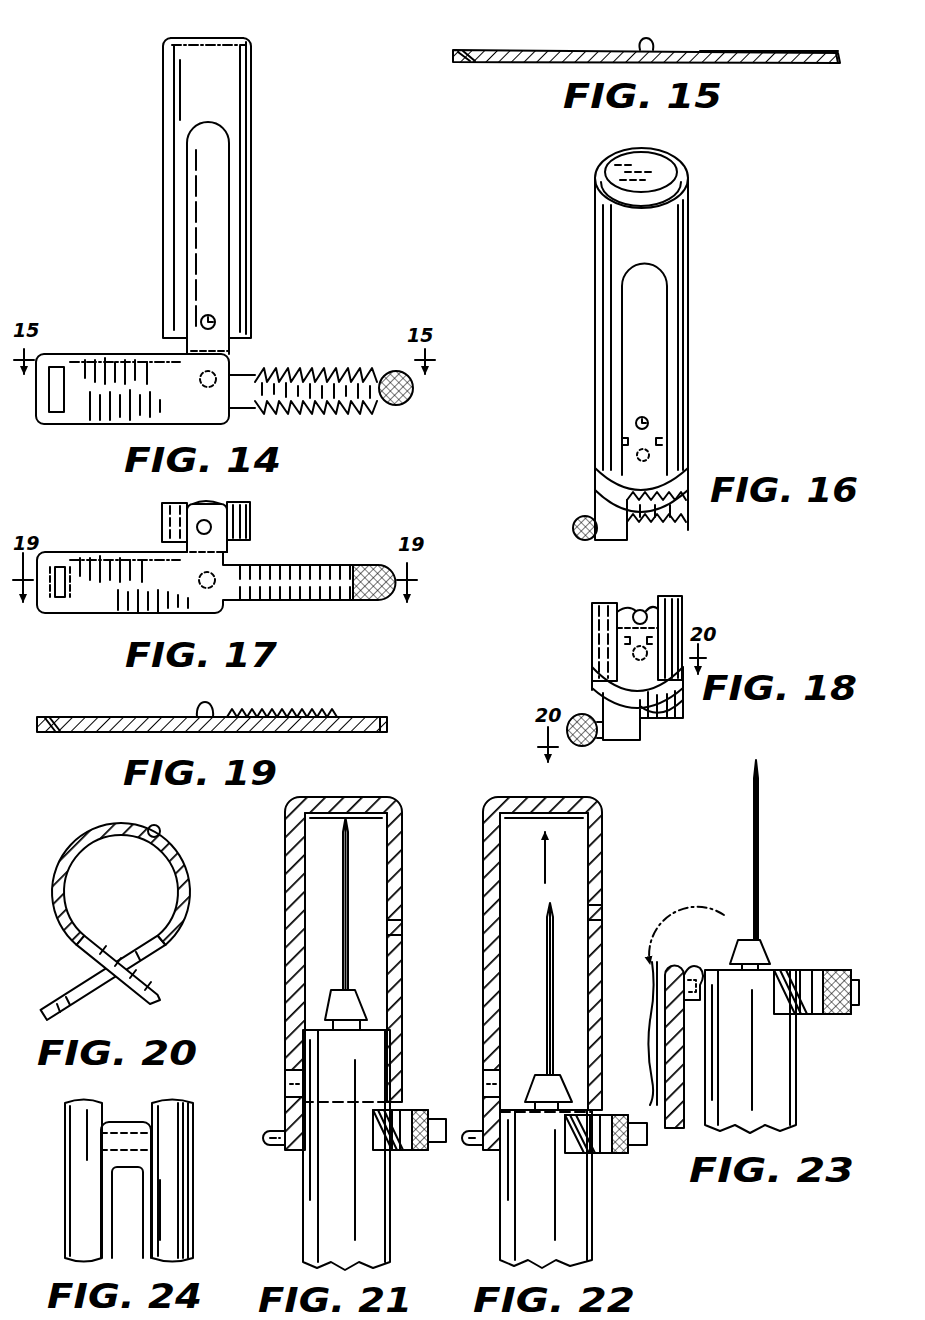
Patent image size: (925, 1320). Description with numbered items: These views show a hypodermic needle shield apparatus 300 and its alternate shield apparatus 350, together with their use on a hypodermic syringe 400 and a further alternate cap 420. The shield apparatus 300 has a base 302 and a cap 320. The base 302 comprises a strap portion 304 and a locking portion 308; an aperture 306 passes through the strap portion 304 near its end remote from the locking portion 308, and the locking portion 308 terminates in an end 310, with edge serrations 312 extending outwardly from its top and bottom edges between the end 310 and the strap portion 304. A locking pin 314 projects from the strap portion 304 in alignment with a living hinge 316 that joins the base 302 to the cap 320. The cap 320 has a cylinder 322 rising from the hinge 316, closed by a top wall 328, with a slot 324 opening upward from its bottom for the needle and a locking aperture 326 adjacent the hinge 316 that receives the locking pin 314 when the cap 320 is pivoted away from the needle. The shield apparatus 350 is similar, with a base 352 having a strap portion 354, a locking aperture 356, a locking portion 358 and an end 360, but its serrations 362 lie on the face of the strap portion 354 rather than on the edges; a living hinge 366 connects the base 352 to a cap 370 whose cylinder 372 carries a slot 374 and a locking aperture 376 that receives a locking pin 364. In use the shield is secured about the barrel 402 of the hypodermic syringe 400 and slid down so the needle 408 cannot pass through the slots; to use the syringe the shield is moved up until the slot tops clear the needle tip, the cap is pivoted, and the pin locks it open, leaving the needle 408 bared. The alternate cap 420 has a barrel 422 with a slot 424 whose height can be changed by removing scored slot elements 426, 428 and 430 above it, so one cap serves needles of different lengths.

In FIG. 14, the hypodermic needle shield apparatus 300 is at (255, 243).
In FIG. 21, the hypodermic needle shield apparatus 300 is at (366, 996).
In FIG. 22, the hypodermic needle shield apparatus 300 is at (580, 999).
In FIG. 14, the base 302 is at (170, 381).
In FIG. 15, the base 302 is at (650, 60).
In FIG. 21, the base 302 is at (411, 1172).
In FIG. 22, the base 302 is at (606, 1134).
In FIG. 23, the base 302 is at (816, 960).
In FIG. 14, the strap portion 304 is at (96, 410).
In FIG. 15, the strap portion 304 is at (512, 63).
In FIG. 16, the strap portion 304 is at (626, 512).
In FIG. 14, the aperture 306 is at (60, 405).
In FIG. 15, the aperture 306 is at (473, 63).
In FIG. 14, the locking portion 308 is at (358, 412).
In FIG. 15, the locking portion 308 is at (750, 50).
In FIG. 16, the locking portion 308 is at (675, 508).
In FIG. 14, the end 310 is at (416, 399).
In FIG. 15, the end 310 is at (848, 65).
In FIG. 16, the end 310 is at (571, 528).
In FIG. 14, the edge serrations 312 is at (345, 416).
In FIG. 16, the edge serrations 312 is at (644, 528).
In FIG. 14, the locking pin 314 is at (199, 375).
In FIG. 15, the locking pin 314 is at (652, 39).
In FIG. 21, the locking pin 314 is at (256, 1130).
In FIG. 22, the locking pin 314 is at (470, 1170).
In FIG. 14, the hinge 316 is at (232, 351).
In FIG. 16, the hinge 316 is at (657, 428).
In FIG. 23, the hinge 316 is at (683, 933).
In FIG. 14, the cap 320 is at (198, 184).
In FIG. 16, the cap 320 is at (635, 308).
In FIG. 21, the cap 320 is at (352, 973).
In FIG. 22, the cap 320 is at (578, 973).
In FIG. 23, the cap 320 is at (683, 1052).
In FIG. 14, the cylinder 322 is at (232, 81).
In FIG. 16, the cylinder 322 is at (663, 240).
In FIG. 14, the slot 324 is at (226, 180).
In FIG. 16, the slot 324 is at (657, 323).
In FIG. 21, the slot 324 is at (427, 901).
In FIG. 22, the slot 324 is at (654, 895).
In FIG. 14, the locking aperture 326 is at (214, 318).
In FIG. 16, the locking aperture 326 is at (647, 419).
In FIG. 21, the locking aperture 326 is at (271, 1072).
In FIG. 22, the locking aperture 326 is at (463, 1059).
In FIG. 14, the top wall 328 is at (232, 37).
In FIG. 16, the top wall 328 is at (663, 163).
In FIG. 17, the shield apparatus 350 is at (216, 565).
In FIG. 18, the shield apparatus 350 is at (656, 670).
In FIG. 21, the shield apparatus 350 is at (366, 996).
In FIG. 22, the shield apparatus 350 is at (580, 999).
In FIG. 17, the base 352 is at (216, 582).
In FIG. 19, the base 352 is at (240, 722).
In FIG. 18, the base 352 is at (636, 720).
In FIG. 21, the base 352 is at (405, 1153).
In FIG. 22, the base 352 is at (606, 1134).
In FIG. 23, the base 352 is at (795, 966).
In FIG. 17, the strap portion 354 is at (153, 602).
In FIG. 19, the strap portion 354 is at (160, 733).
In FIG. 18, the strap portion 354 is at (595, 693).
In FIG. 17, the locking aperture 356 is at (62, 597).
In FIG. 19, the locking aperture 356 is at (57, 733).
In FIG. 17, the locking portion 358 is at (327, 602).
In FIG. 19, the locking portion 358 is at (300, 733).
In FIG. 18, the locking portion 358 is at (680, 710).
In FIG. 17, the end 360 is at (387, 603).
In FIG. 19, the end 360 is at (388, 725).
In FIG. 18, the end 360 is at (572, 745).
In FIG. 19, the serrations 362 is at (307, 717).
In FIG. 18, the serrations 362 is at (667, 717).
In FIG. 17, the locking pin 364 is at (198, 573).
In FIG. 19, the locking pin 364 is at (213, 703).
In FIG. 18, the locking pin 364 is at (631, 652).
In FIG. 20, the locking pin 364 is at (162, 833).
In FIG. 21, the locking pin 364 is at (268, 1140).
In FIG. 22, the locking pin 364 is at (468, 1150).
In FIG. 17, the hinge 366 is at (215, 552).
In FIG. 18, the hinge 366 is at (620, 623).
In FIG. 23, the hinge 366 is at (714, 912).
In FIG. 17, the cap 370 is at (229, 514).
In FIG. 18, the cap 370 is at (631, 622).
In FIG. 21, the cap 370 is at (352, 973).
In FIG. 22, the cap 370 is at (578, 973).
In FIG. 23, the cap 370 is at (683, 1052).
In FIG. 18, the cylinder 372 is at (680, 602).
In FIG. 17, the slot 374 is at (221, 507).
In FIG. 18, the slot 374 is at (628, 609).
In FIG. 21, the slot 374 is at (398, 933).
In FIG. 22, the slot 374 is at (605, 910).
In FIG. 17, the locking aperture 376 is at (204, 519).
In FIG. 18, the locking aperture 376 is at (642, 610).
In FIG. 21, the locking aperture 376 is at (271, 1072).
In FIG. 22, the locking aperture 376 is at (463, 1059).
In FIG. 21, the hypodermic syringe 400 is at (351, 1044).
In FIG. 22, the hypodermic syringe 400 is at (587, 1050).
In FIG. 23, the hypodermic syringe 400 is at (783, 951).
In FIG. 21, the barrel 402 is at (318, 1230).
In FIG. 22, the barrel 402 is at (590, 1240).
In FIG. 23, the barrel 402 is at (782, 1133).
In FIG. 21, the needle 408 is at (352, 958).
In FIG. 22, the needle 408 is at (556, 1035).
In FIG. 23, the needle 408 is at (760, 840).
In FIG. 24, the cap 420 is at (105, 1177).
In FIG. 24, the barrel 422 is at (65, 1195).
In FIG. 24, the slot 424 is at (148, 1248).
In FIG. 24, the slot element 426 is at (125, 1160).
In FIG. 24, the slot element 428 is at (137, 1125).
In FIG. 24, the slot element 430 is at (113, 1122).